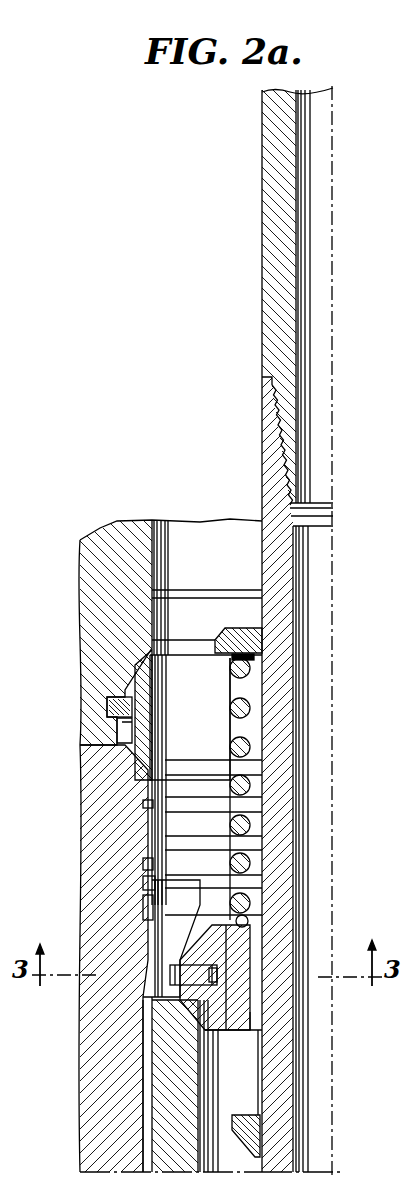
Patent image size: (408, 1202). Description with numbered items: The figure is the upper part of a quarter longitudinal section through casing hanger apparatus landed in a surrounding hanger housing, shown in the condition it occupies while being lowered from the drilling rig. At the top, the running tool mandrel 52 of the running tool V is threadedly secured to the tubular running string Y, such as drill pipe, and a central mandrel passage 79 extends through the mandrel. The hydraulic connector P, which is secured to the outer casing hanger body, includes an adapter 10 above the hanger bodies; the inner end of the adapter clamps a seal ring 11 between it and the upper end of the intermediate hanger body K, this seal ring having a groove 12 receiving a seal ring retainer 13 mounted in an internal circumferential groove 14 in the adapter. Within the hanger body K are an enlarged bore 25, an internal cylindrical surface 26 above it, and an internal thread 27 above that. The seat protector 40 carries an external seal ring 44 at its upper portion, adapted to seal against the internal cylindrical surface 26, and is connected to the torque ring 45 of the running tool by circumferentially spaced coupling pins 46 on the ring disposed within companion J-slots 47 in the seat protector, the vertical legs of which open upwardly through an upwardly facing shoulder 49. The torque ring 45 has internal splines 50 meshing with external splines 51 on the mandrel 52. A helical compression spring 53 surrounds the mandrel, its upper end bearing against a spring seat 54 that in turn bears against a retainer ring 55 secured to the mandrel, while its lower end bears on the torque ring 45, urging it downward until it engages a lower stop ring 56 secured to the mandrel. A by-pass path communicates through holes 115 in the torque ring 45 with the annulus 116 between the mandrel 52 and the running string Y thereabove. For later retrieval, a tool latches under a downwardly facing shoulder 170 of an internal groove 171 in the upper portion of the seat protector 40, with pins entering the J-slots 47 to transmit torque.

The tubular running string Y is at (268, 254).
The running tool mandrel 52 is at (288, 790).
The hydraulic connector P is at (80, 572).
The adapter 10 is at (93, 616).
The annulus 116 is at (206, 587).
The spring seat 54 is at (258, 630).
The retainer ring 55 is at (250, 656).
The seal ring 11 is at (140, 710).
The seal ring retainer 13 is at (133, 700).
The internal circumferential groove 14 is at (106, 707).
The groove 12 is at (133, 735).
The intermediate hanger body K is at (96, 768).
The helical compression spring 53 is at (252, 748).
The external splines 51 is at (252, 862).
The internal thread 27 is at (143, 804).
The external seal ring 44 is at (143, 862).
The downwardly facing shoulder 170 is at (150, 882).
The internal groove 171 is at (150, 900).
The internal cylindrical surface 26 is at (150, 935).
The J-slots 47 is at (170, 975).
The coupling pins 46 is at (218, 976).
The torque ring 45 is at (215, 945).
The upwardly facing shoulder 49 is at (240, 960).
The holes 115 is at (246, 930).
The internal splines 50 is at (255, 1022).
The running tool V is at (228, 1032).
The seat protector 40 is at (165, 1110).
The enlarged bore 25 is at (146, 1145).
The lower stop ring 56 is at (262, 1132).
The central mandrel passage 79 is at (331, 1085).